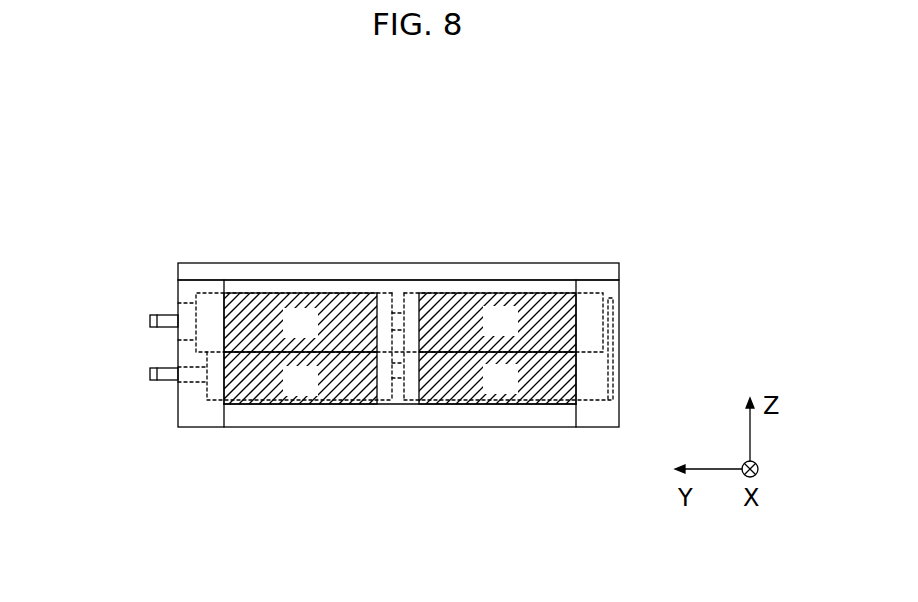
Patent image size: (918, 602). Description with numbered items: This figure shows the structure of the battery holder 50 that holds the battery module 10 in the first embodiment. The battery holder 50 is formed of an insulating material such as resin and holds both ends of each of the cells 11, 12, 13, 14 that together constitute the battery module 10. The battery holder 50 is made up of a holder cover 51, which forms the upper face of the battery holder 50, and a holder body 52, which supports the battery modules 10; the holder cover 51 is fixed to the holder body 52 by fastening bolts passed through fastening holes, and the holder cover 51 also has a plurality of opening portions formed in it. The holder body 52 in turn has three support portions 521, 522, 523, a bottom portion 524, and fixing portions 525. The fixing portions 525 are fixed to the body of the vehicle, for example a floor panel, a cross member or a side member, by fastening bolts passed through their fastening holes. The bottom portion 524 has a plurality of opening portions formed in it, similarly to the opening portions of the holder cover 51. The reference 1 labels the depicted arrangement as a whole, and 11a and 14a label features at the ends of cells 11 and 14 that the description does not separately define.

The power storage device 1 is at (410, 335).
The battery module 10 is at (403, 298).
The cell 11 is at (315, 335).
The cell 12 is at (515, 333).
The cell 13 is at (515, 392).
The cell 14 is at (315, 393).
The terminal of first battery module 11a is at (150, 322).
The terminal of fourth battery module 14a is at (150, 376).
The battery holder 50 is at (467, 339).
The holder cover 51 is at (624, 272).
The holder body 52 is at (439, 353).
The support portion 521 is at (190, 279).
The support portion 522 is at (603, 290).
The support portion 523 is at (402, 288).
The bottom portion 524 is at (298, 418).
The fixing portion 525 is at (200, 417).